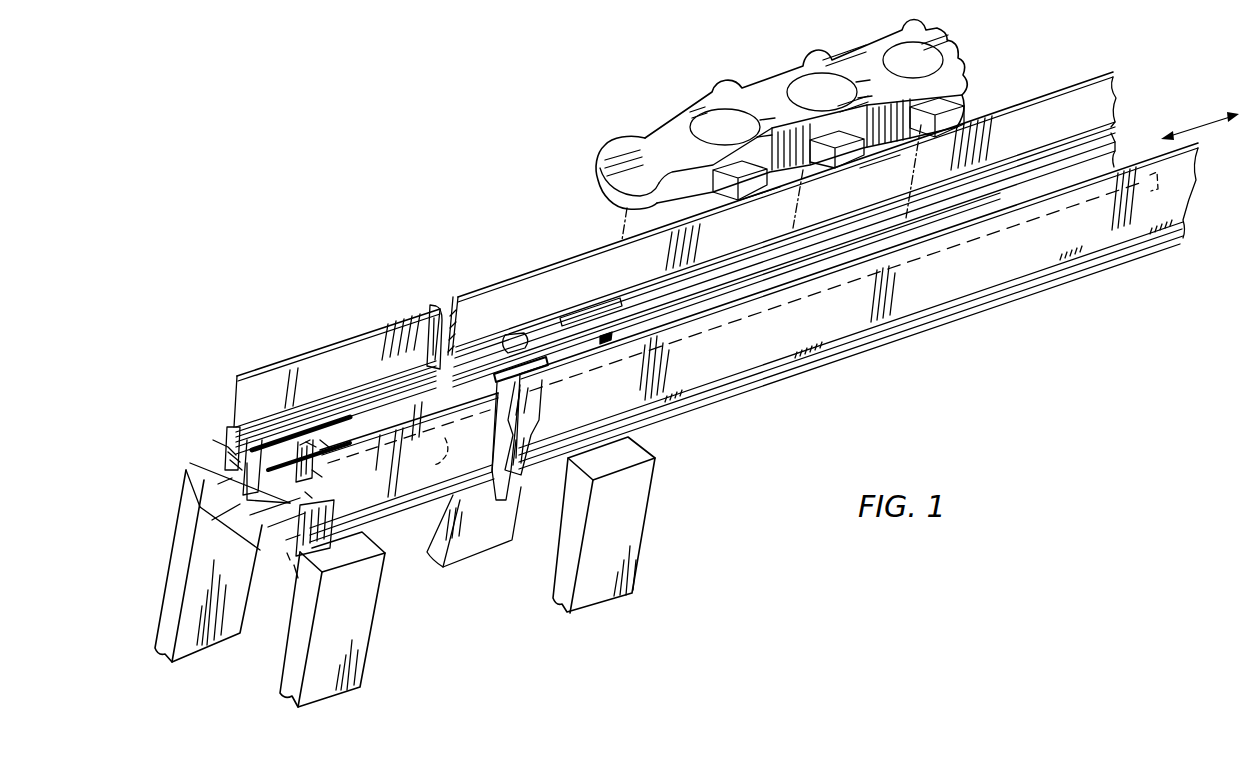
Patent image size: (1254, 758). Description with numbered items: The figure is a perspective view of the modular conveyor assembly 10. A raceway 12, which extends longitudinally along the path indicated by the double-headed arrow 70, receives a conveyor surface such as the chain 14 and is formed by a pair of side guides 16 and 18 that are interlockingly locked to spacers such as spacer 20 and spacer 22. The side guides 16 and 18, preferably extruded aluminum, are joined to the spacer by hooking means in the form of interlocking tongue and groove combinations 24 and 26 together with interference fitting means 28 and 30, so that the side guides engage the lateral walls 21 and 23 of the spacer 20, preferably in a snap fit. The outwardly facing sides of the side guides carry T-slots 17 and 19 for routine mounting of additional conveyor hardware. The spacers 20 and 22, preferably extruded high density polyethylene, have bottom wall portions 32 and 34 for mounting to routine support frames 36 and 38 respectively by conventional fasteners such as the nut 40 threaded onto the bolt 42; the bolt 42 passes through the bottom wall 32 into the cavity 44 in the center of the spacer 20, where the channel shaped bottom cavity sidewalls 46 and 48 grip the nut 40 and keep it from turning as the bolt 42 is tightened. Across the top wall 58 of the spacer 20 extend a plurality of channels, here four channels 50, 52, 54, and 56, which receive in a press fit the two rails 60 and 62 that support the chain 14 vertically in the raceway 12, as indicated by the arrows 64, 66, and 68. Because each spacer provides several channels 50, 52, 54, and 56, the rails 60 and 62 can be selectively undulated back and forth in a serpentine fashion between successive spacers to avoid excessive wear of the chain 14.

The conveyor assembly 10 is at (458, 262).
The raceway 12 is at (1161, 99).
The chain 14 is at (785, 76).
The side guide 16 is at (283, 363).
The T-slot 17 is at (228, 452).
The side guide 18 is at (748, 355).
The T-slot 19 is at (322, 546).
The spacer 20 is at (213, 440).
The lateral wall 21 is at (218, 484).
The spacer 22 is at (543, 343).
The lateral wall 23 is at (287, 553).
The tongue and groove combination 24 is at (232, 438).
The tongue and groove combination 26 is at (312, 498).
The interference fitting means 28 is at (232, 498).
The interference fitting means 30 is at (298, 578).
The bottom wall portion 32 is at (212, 520).
The bottom wall portion 34 is at (500, 496).
The support frame 36 is at (357, 613).
The support frame 38 is at (621, 534).
The nut 40 is at (268, 527).
The bolt 42 is at (280, 484).
The cavity 44 is at (230, 460).
The bottom cavity sidewall 46 is at (250, 515).
The bottom cavity sidewall 48 is at (286, 540).
The channel 50 is at (255, 440).
The channel 52 is at (320, 440).
The channel 54 is at (306, 442).
The channel 56 is at (322, 477).
The top wall 58 is at (300, 445).
The rail 60 is at (416, 365).
The rail 62 is at (445, 440).
The arrow 64 is at (611, 270).
The arrow 66 is at (788, 209).
The arrow 68 is at (899, 162).
The double-headed arrow 70 is at (1214, 130).